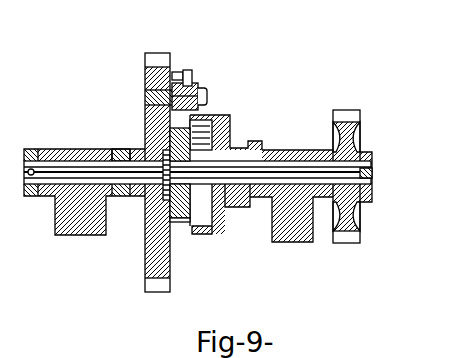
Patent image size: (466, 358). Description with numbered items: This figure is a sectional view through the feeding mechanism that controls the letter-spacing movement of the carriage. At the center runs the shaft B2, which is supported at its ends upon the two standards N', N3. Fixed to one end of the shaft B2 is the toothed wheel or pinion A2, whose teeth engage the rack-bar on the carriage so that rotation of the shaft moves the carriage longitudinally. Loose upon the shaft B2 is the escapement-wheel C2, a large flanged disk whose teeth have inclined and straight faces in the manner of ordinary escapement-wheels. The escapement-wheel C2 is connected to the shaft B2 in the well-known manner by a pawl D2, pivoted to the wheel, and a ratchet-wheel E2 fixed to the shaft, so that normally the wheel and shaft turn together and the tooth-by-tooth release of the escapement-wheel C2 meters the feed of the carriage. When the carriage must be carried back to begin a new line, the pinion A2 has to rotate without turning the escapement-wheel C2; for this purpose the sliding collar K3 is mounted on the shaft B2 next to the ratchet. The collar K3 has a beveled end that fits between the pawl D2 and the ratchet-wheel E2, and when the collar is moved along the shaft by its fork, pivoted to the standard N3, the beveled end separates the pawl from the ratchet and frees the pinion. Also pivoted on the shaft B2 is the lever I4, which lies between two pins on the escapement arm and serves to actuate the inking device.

The standard N' is at (84, 208).
The standard N3 is at (291, 211).
The escapement-wheel C2 is at (145, 112).
The lever I4 is at (121, 142).
The sliding collar K3 is at (226, 136).
The pawl D2 is at (199, 86).
The ratchet-wheel E2 is at (200, 224).
The toothed wheel or pinion A2 is at (362, 132).
The shaft B2 is at (372, 172).